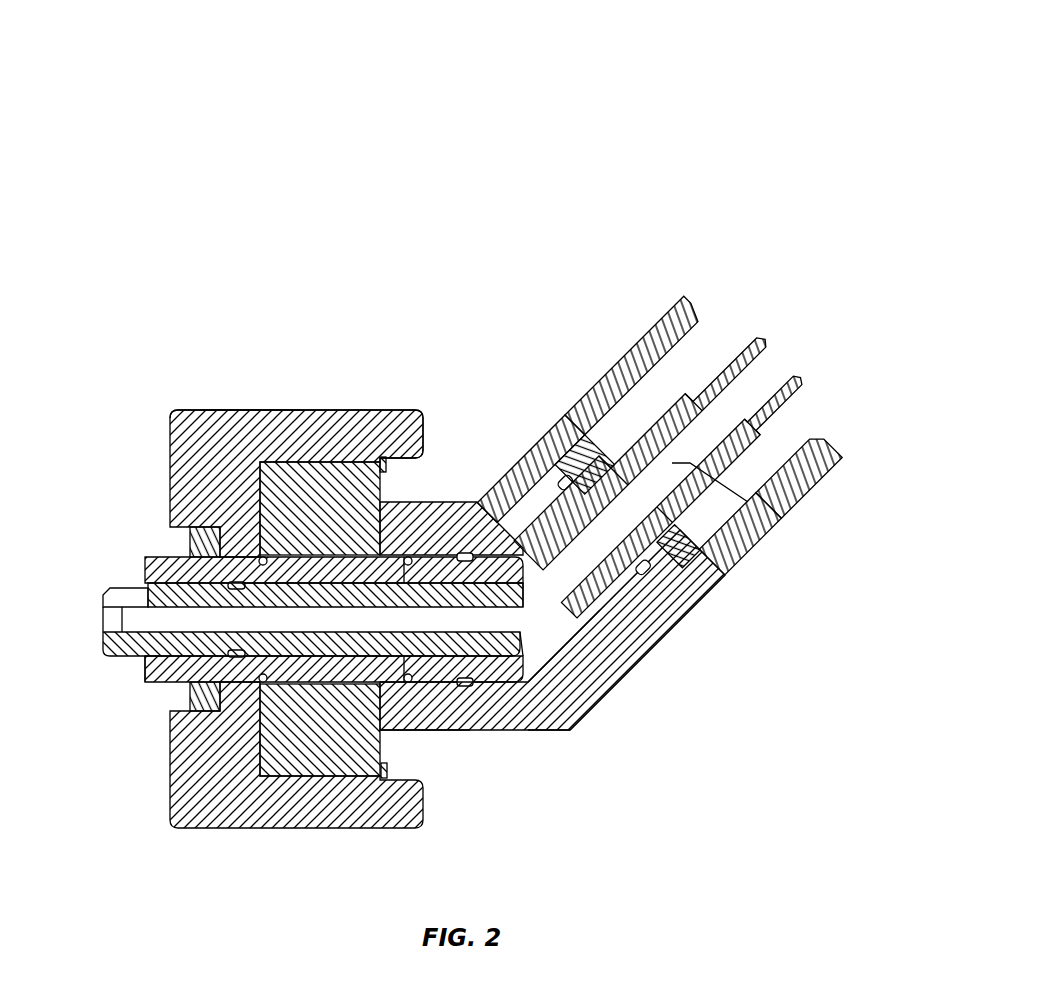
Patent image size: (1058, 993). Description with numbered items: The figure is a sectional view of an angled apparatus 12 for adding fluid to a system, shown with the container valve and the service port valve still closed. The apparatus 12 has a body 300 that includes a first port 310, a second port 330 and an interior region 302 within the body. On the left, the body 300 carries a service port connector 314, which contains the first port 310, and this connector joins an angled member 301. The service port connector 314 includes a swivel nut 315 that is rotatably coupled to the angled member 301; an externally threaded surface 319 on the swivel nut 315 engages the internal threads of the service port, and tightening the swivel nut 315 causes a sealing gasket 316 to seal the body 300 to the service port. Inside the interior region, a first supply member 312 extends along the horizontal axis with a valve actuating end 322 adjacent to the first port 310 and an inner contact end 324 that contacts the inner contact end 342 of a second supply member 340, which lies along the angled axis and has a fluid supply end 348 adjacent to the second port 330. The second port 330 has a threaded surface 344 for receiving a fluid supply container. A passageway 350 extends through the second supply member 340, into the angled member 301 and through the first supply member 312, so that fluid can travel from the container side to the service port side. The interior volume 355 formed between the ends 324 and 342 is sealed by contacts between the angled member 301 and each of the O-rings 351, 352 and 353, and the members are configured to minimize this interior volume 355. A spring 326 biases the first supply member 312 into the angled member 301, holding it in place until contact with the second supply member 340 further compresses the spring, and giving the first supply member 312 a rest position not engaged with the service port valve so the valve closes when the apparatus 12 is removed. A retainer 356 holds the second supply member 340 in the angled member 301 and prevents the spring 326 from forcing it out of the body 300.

The apparatus 12 is at (347, 42).
The body 300 is at (637, 671).
The angled member 301 is at (662, 640).
The interior region 302 is at (428, 503).
The first port 310 is at (150, 665).
The first supply member 312 is at (385, 780).
The service port connector 314 is at (247, 410).
The swivel nut 315 is at (180, 410).
The sealing gasket 316 is at (184, 700).
The externally threaded surface 319 is at (170, 557).
The valve actuating end 322 is at (112, 620).
The inner contact end 324 is at (545, 718).
The spring 326 is at (418, 700).
The second port 330 is at (843, 452).
The second supply member 340 is at (514, 469).
The inner contact end 342 is at (601, 682).
The threaded surface 344 is at (660, 335).
The fluid supply end 348 is at (765, 340).
The passageway 350 is at (778, 522).
The O-ring 351 is at (697, 600).
The O-ring 352 is at (466, 686).
The O-ring 353 is at (241, 582).
The interior volume 355 is at (578, 630).
The retainer 356 is at (578, 446).